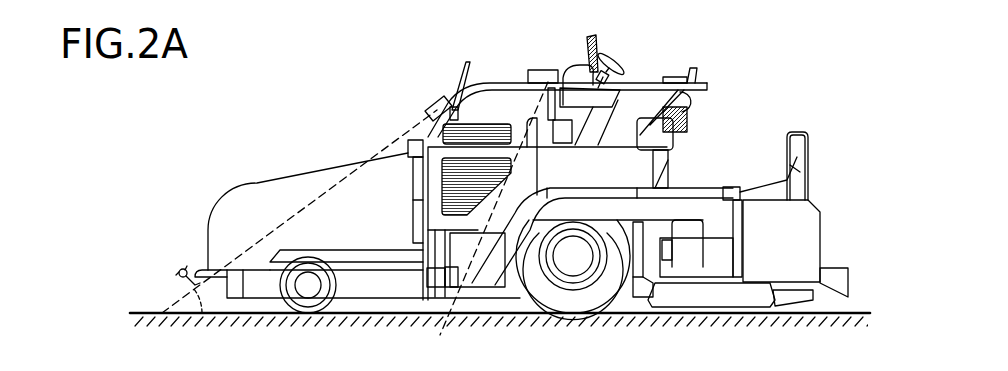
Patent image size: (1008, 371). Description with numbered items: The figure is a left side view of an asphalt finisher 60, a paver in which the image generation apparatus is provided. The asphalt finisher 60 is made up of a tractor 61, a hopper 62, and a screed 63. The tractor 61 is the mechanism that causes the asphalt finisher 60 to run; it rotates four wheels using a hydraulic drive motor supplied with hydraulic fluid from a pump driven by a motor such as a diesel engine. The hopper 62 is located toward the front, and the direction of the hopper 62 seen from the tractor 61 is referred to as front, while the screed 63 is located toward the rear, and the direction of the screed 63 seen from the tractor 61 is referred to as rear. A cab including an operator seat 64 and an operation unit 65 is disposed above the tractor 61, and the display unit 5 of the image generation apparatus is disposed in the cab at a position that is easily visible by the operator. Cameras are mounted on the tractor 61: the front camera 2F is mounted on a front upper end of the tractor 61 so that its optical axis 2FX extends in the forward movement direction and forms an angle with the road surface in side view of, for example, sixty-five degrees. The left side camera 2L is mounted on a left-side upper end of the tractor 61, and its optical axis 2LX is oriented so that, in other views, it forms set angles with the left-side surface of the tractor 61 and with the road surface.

The asphalt finisher 60 is at (704, 46).
The tractor 61 is at (496, 312).
The hopper 62 is at (182, 228).
The screed 63 is at (835, 240).
The operator seat 64 is at (698, 70).
The operation unit 65 is at (570, 62).
The display unit 5 is at (598, 35).
The front camera 2F is at (431, 98).
The left side camera 2L is at (543, 70).
The optical axis of the front camera 2FX is at (378, 145).
The optical axis of the left side camera 2LX is at (427, 337).